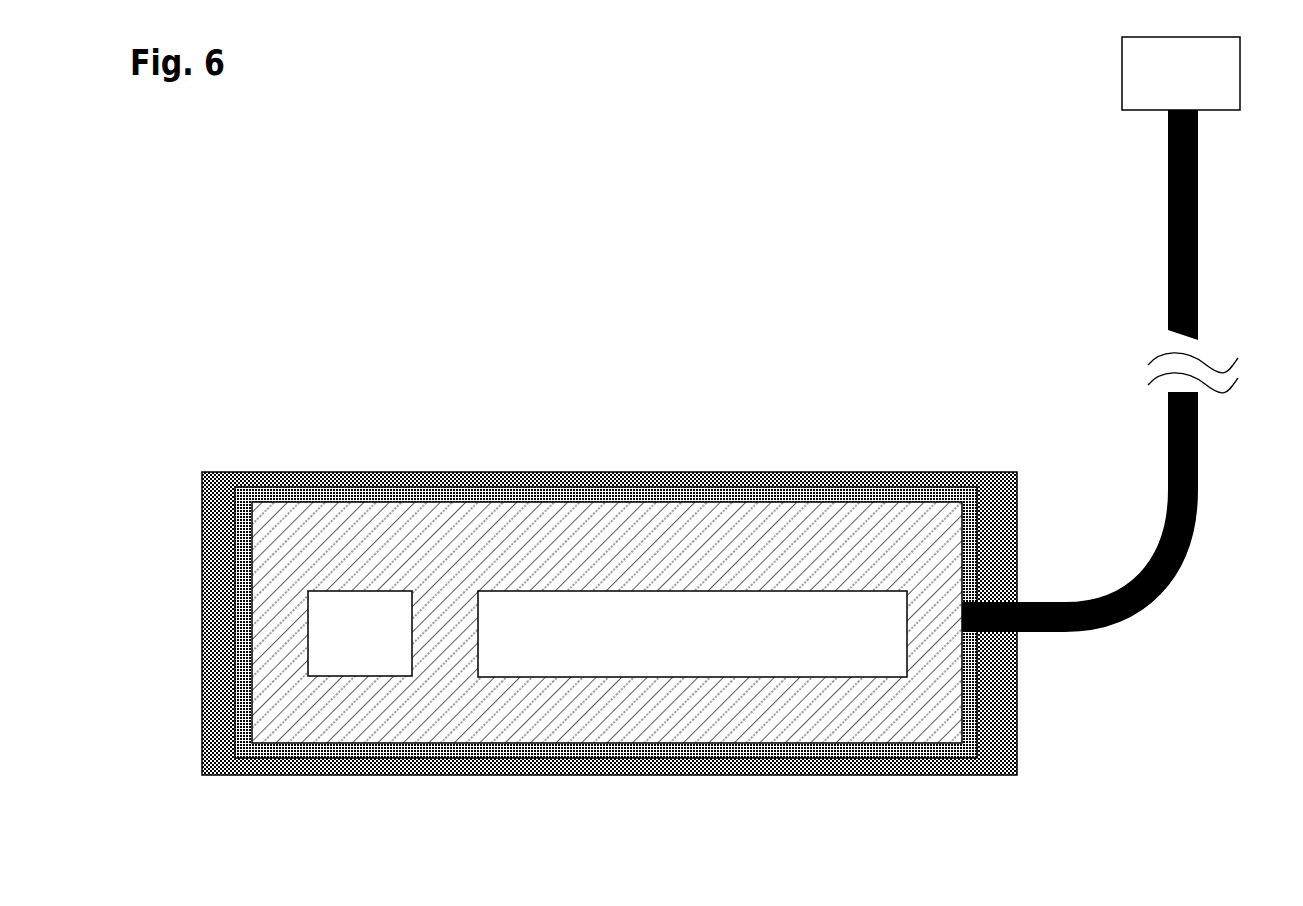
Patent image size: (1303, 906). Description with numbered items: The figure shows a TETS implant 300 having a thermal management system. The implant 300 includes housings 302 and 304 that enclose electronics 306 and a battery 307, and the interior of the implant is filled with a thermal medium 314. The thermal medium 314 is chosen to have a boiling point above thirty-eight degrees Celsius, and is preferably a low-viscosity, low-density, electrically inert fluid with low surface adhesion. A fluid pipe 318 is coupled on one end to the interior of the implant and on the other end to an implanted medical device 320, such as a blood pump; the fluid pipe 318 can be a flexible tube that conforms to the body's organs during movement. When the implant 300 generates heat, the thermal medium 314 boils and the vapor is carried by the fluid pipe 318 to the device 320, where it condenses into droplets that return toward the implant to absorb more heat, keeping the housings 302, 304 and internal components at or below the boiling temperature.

The TETS implant 300 is at (218, 380).
The housing 302 is at (413, 475).
The housing 304 is at (697, 497).
The electronics 306 is at (692, 634).
The battery 307 is at (360, 633).
The thermal medium 314 is at (862, 538).
The fluid pipe 318 is at (1168, 548).
The implanted medical device 320 is at (1181, 73).